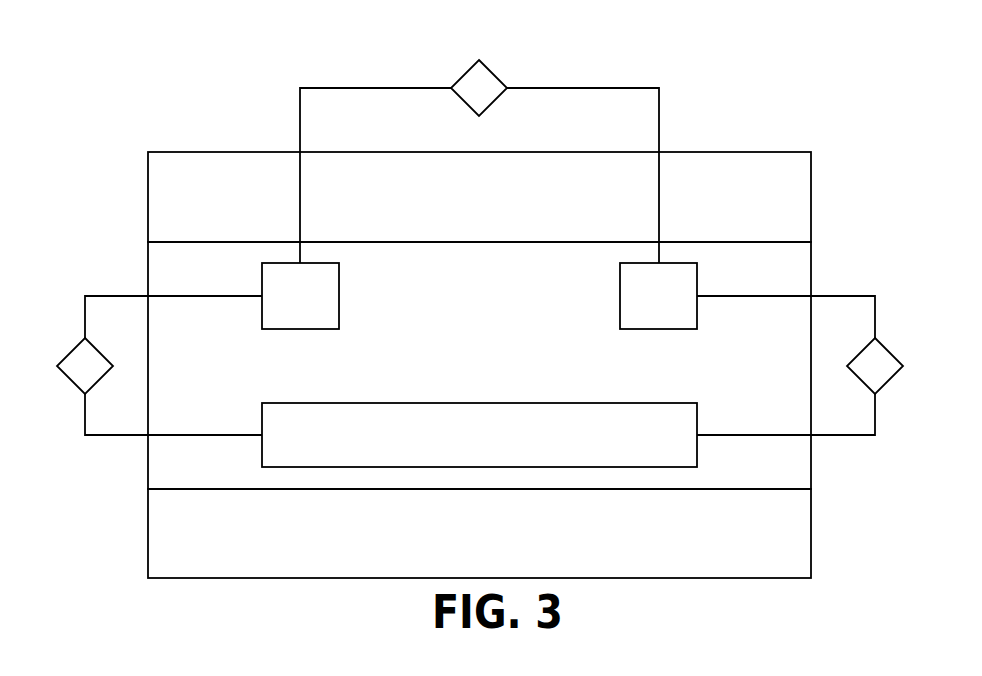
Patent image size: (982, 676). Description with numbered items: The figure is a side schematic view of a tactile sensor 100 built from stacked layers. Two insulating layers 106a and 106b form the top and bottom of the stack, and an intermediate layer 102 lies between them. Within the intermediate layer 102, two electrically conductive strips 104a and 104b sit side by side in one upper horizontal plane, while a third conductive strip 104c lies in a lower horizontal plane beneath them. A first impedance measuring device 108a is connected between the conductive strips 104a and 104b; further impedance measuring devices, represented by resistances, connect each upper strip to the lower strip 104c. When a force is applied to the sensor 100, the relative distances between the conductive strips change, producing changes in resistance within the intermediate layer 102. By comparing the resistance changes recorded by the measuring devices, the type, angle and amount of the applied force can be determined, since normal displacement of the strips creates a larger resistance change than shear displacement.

The sensor 100 is at (168, 92).
The intermediate layer 102 is at (504, 357).
The electrically conductive strip 104a is at (340, 297).
The electrically conductive strip 104b is at (620, 301).
The third conductive strip 104c is at (628, 403).
The insulating layer 106a is at (812, 200).
The insulating layer 106b is at (812, 546).
The first impedance measuring device 108a is at (660, 115).